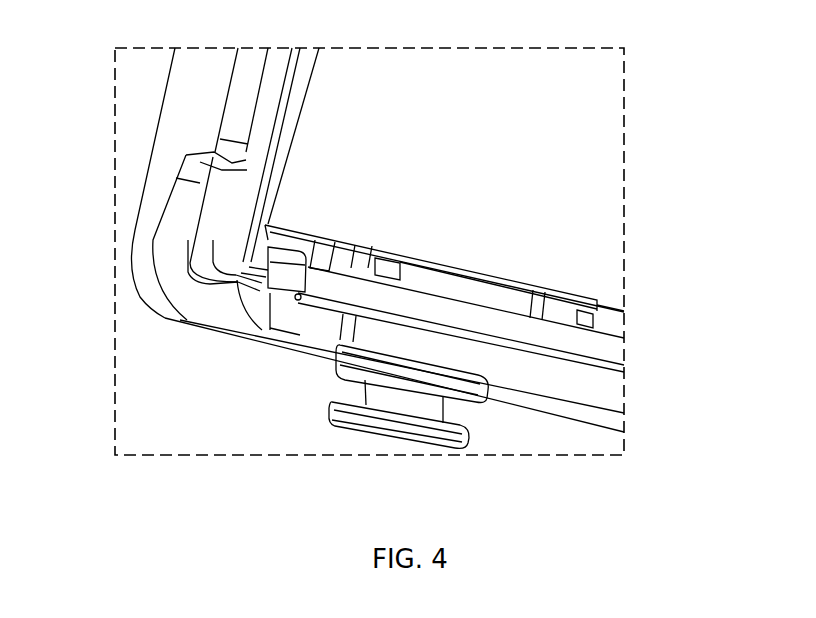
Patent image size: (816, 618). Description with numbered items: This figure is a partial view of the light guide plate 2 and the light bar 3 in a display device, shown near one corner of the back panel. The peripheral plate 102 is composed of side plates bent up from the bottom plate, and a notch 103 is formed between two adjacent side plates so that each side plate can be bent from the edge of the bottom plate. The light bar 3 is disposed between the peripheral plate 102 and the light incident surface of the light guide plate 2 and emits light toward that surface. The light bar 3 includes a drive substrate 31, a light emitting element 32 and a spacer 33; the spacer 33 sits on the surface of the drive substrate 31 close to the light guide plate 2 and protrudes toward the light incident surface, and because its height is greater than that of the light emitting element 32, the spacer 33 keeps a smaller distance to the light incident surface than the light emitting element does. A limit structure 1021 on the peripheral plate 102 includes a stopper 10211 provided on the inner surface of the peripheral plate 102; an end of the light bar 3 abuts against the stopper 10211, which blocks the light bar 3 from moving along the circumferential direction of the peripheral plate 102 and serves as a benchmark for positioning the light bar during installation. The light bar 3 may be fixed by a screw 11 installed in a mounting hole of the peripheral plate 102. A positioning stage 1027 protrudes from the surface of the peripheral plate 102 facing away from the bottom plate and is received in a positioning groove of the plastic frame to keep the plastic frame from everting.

The light guide plate 2 is at (300, 102).
The light bar 3 is at (690, 170).
The screw 11 is at (372, 405).
The drive substrate 31 is at (593, 350).
The light emitting element 32 is at (512, 300).
The spacer 33 is at (340, 255).
The peripheral plate 102 is at (593, 390).
The notch 103 is at (177, 233).
The limit structure 1021 is at (177, 381).
The stopper 10211 is at (277, 285).
The positioning stage 1027 is at (413, 343).